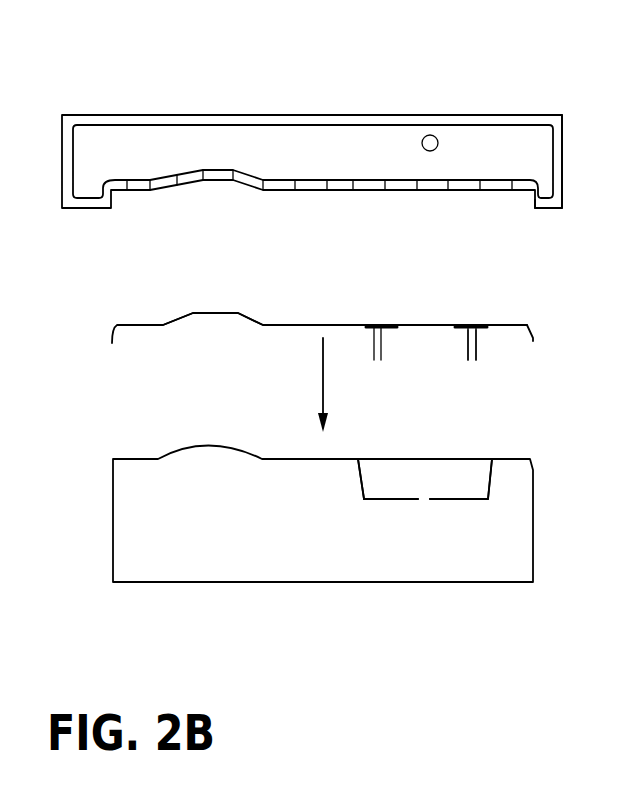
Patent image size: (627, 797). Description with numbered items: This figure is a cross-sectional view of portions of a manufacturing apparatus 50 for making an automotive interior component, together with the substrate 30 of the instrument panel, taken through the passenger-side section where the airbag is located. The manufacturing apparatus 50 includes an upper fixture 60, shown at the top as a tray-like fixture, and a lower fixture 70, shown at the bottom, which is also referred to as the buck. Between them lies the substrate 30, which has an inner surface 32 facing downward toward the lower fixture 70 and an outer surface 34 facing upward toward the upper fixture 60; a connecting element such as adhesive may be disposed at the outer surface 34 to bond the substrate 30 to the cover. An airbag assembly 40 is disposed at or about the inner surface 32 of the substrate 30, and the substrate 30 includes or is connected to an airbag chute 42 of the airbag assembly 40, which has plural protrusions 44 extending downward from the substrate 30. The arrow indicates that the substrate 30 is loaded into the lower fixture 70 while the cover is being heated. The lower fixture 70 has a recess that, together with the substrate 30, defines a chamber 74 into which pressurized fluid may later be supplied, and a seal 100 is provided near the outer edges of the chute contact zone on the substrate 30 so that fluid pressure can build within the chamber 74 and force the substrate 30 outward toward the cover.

The manufacturing apparatus 50 is at (594, 123).
The upper fixture 60 is at (563, 152).
The substrate 30 is at (536, 338).
The inner surface 32 is at (272, 328).
The outer surface 34 is at (502, 325).
The airbag assembly 40 is at (488, 346).
The airbag chute 42 is at (374, 348).
The protrusions 44 is at (464, 334).
The lower fixture 70 is at (533, 556).
The chamber 74 is at (492, 483).
The seal 100 is at (367, 456).